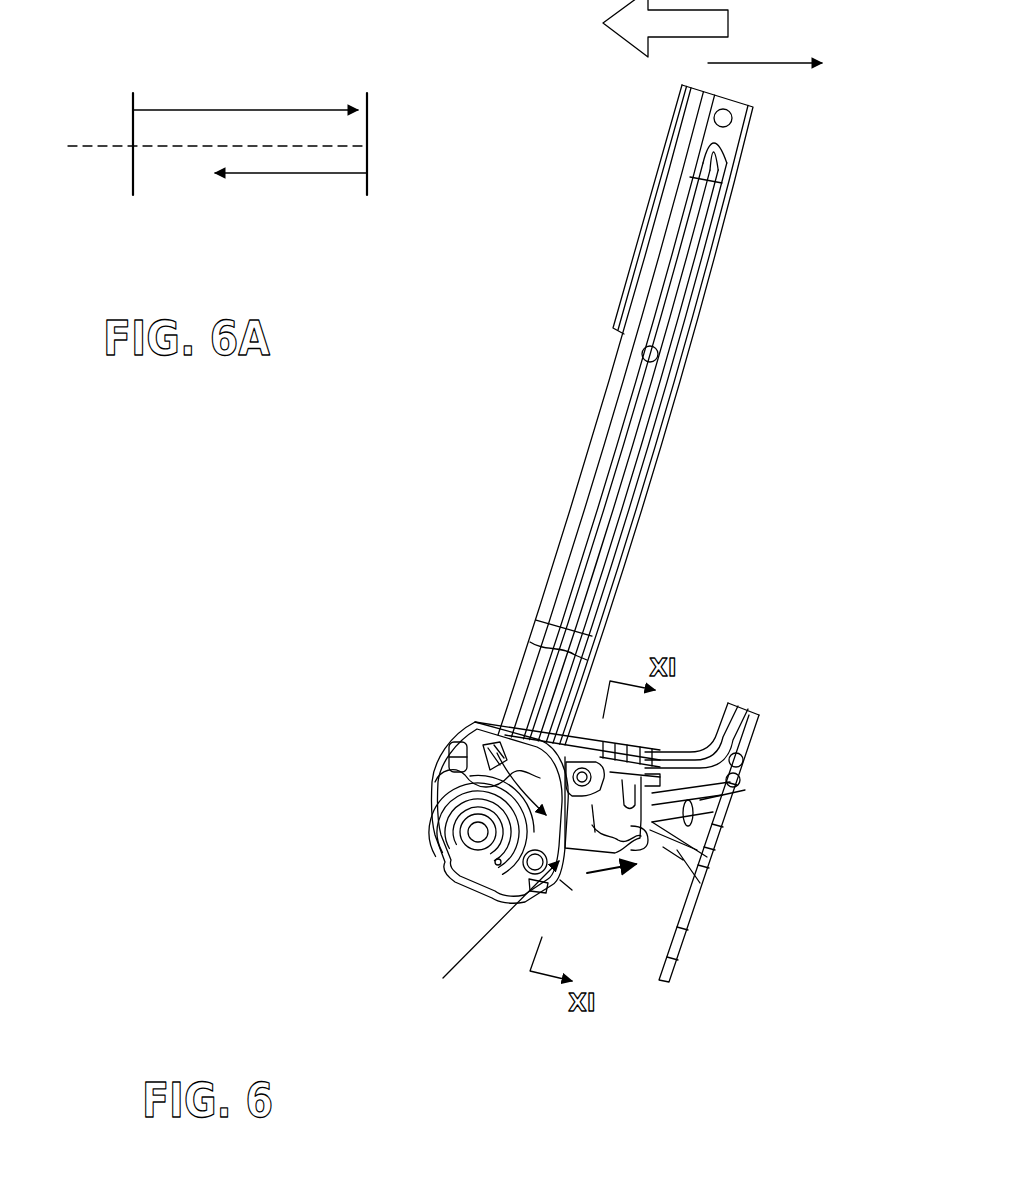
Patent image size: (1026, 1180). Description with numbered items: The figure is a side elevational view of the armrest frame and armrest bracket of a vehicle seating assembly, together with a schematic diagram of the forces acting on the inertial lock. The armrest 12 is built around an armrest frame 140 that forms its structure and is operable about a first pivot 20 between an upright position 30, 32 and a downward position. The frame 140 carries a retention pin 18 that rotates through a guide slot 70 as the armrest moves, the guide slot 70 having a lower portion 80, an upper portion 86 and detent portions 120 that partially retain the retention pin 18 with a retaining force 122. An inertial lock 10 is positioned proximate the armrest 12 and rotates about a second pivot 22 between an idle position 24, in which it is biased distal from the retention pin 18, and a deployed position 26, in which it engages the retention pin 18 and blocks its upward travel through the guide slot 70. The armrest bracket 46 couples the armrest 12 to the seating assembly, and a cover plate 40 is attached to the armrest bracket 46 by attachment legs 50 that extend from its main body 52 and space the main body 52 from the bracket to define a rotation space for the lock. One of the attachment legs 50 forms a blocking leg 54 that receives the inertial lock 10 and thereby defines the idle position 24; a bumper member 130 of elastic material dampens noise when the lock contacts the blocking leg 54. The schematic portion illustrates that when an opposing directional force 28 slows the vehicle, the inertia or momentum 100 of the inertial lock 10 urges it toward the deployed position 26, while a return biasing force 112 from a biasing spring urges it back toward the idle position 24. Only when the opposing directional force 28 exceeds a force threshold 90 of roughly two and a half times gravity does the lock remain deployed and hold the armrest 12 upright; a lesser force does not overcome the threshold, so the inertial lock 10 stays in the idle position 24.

In FIG. 6, the inertial lock 10 is at (642, 859).
In FIG. 6, the armrest 12 is at (508, 474).
In FIG. 6, the retention pin 18 is at (505, 875).
In FIG. 6, the first pivot 20 is at (475, 832).
In FIG. 6, the second pivot 22 is at (577, 768).
In FIG. 6A, the idle position 24 is at (367, 130).
In FIG. 6, the idle position 24 is at (488, 936).
In FIG. 6A, the deployed position 26 is at (97, 172).
In FIG. 6A, the opposing directional force 28 is at (152, 206).
In FIG. 6, the opposing directional force 28 is at (760, 67).
In FIG. 6, the upright position 30 is at (572, 383).
In FIG. 6, the upright position 32 is at (612, 239).
In FIG. 6, the cover plate 40 is at (747, 750).
In FIG. 6, the armrest bracket 46 is at (752, 720).
In FIG. 6, the attachment legs 50 is at (665, 790).
In FIG. 6, the main body 52 is at (566, 880).
In FIG. 6, the blocking leg 54 is at (700, 877).
In FIG. 6, the guide slot 70 is at (497, 753).
In FIG. 6, the lower portion 80 is at (497, 876).
In FIG. 6, the upper portion 86 is at (486, 742).
In FIG. 6A, the force threshold 90 is at (133, 120).
In FIG. 6A, the inertia or momentum 100 is at (258, 173).
In FIG. 6, the inertia or momentum 100 is at (713, 18).
In FIG. 6A, the return biasing force 112 is at (240, 110).
In FIG. 6, the return biasing force 112 is at (634, 873).
In FIG. 6, the detent portions 120 is at (531, 864).
In FIG. 6, the retaining force 122 is at (460, 790).
In FIG. 6, the bumper member 130 is at (720, 835).
In FIG. 6, the armrest frame 140 is at (683, 314).